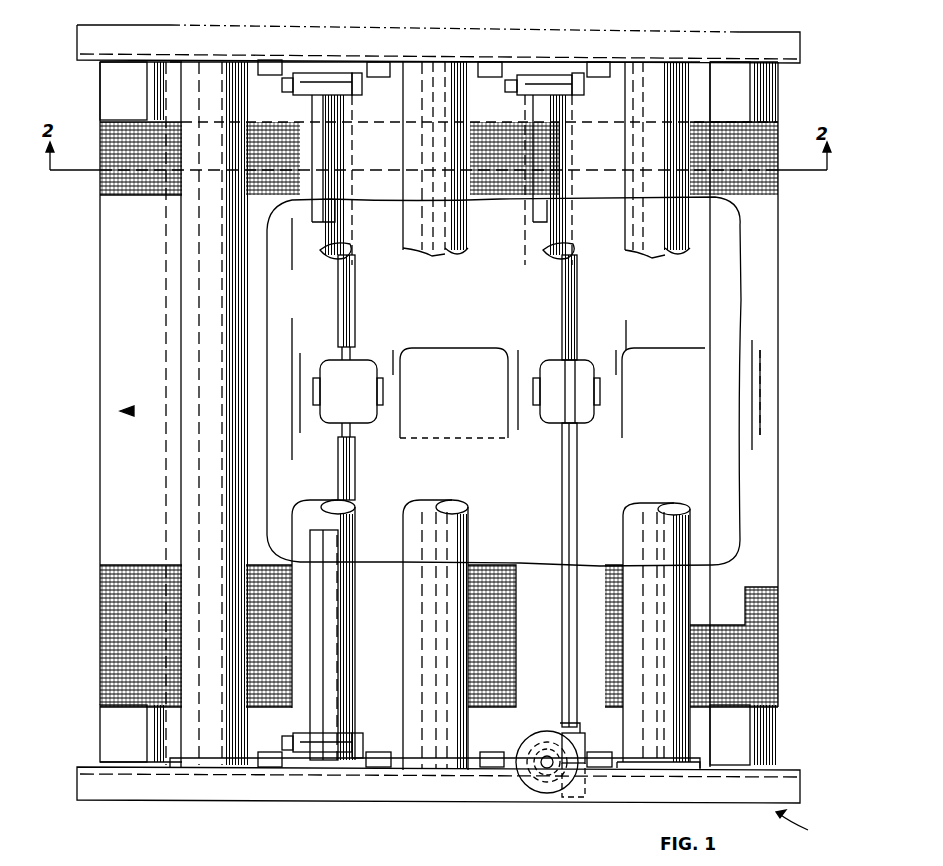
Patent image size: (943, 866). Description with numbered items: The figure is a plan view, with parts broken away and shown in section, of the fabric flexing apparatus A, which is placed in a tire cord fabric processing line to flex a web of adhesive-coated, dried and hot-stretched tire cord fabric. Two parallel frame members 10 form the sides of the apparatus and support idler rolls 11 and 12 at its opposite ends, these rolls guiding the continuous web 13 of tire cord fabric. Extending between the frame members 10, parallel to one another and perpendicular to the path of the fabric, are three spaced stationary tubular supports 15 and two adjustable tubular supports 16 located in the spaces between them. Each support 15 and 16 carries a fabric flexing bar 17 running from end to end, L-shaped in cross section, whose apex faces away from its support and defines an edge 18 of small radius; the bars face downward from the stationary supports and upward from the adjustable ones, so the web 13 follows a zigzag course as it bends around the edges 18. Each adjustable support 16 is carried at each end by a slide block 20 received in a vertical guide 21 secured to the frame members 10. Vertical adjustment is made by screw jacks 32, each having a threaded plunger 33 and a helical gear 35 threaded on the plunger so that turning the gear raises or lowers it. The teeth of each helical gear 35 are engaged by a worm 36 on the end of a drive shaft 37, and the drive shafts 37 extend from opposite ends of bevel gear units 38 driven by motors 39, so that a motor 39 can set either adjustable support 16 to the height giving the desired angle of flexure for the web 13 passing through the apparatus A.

The frame member 10 is at (80, 45).
The idler roll 11 is at (765, 96).
The idler roll 12 is at (110, 730).
The web of tire cord fabric 13 is at (108, 626).
The stationary tubular support 15 is at (181, 310).
The adjustable tubular support 16 is at (303, 253).
The fabric flexing bar 17 is at (197, 85).
The edge 18 is at (325, 188).
The slide block 20 is at (335, 73).
The vertical guide 21 is at (268, 60).
The screw jack 32 is at (578, 742).
The threaded plunger 33 is at (546, 750).
The helical gear 35 is at (530, 792).
The worm 36 is at (580, 790).
The drive shaft 37 is at (358, 303).
The bevel gear unit 38 is at (456, 391).
The motor 39 is at (549, 379).
The fabric flexing apparatus A is at (800, 829).